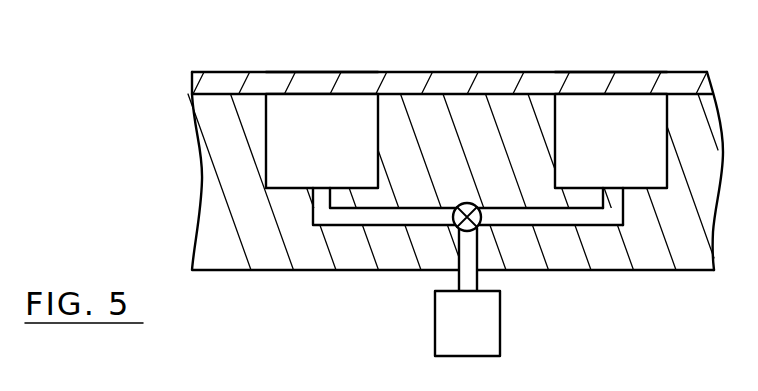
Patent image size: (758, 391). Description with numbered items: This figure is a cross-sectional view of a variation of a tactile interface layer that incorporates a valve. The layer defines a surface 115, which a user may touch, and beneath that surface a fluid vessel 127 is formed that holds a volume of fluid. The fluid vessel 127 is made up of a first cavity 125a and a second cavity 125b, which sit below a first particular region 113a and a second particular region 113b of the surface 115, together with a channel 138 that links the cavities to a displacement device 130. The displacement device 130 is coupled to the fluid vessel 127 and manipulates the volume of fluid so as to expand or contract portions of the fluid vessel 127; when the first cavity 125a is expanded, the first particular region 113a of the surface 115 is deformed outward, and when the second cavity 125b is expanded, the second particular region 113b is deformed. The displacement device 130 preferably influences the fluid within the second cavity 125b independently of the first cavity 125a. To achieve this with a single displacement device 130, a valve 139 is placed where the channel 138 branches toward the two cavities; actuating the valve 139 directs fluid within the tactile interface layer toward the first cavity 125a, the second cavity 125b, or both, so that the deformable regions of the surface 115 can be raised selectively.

The first particular region 113a is at (323, 72).
The second particular region 113b is at (612, 72).
The surface 115 is at (678, 72).
The first cavity 125a is at (354, 155).
The second cavity 125b is at (640, 155).
The fluid vessel 127 is at (332, 218).
The displacement device 130 is at (480, 323).
The channel 138 is at (609, 220).
The valve 139 is at (456, 227).